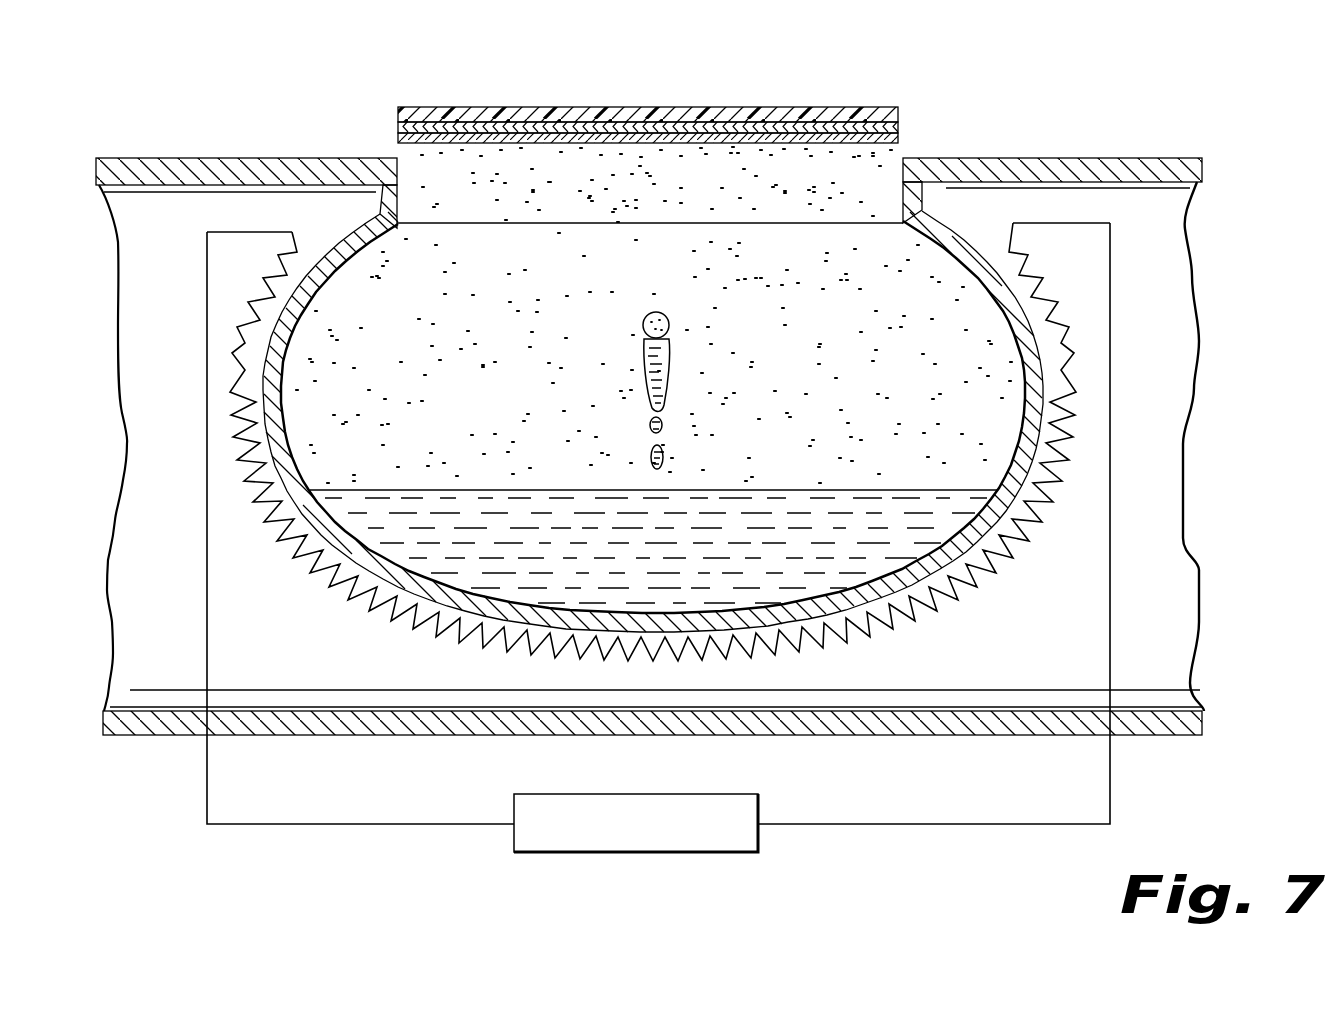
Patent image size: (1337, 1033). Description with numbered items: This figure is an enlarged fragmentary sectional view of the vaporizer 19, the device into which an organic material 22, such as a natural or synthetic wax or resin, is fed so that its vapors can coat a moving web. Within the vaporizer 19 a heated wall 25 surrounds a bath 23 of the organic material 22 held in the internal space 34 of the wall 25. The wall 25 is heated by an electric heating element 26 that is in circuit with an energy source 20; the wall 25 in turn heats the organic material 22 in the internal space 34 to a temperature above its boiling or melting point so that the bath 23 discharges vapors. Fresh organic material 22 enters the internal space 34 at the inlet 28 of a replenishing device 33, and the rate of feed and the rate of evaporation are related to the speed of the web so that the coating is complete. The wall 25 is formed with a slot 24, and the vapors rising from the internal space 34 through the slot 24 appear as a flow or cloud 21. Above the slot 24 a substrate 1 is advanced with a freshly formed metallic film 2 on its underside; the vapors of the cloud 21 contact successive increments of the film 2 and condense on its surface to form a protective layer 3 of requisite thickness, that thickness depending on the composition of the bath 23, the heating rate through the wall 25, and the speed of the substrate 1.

The substrate 1 is at (419, 110).
The film 2 is at (483, 126).
The layer 3 is at (543, 137).
The vaporizer 19 is at (1074, 139).
The energy source 20 is at (718, 855).
The flow or cloud of vapors 21 is at (706, 152).
The organic material 22 is at (666, 152).
The bath 23 is at (889, 489).
The slot 24 is at (399, 199).
The wall 25 is at (425, 583).
The heating element 26 is at (1005, 550).
The inlet 28 is at (647, 315).
The replenishing device 33 is at (670, 375).
The internal space 34 is at (417, 418).